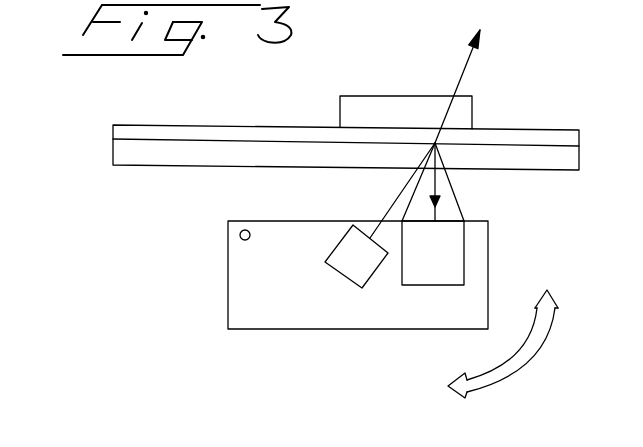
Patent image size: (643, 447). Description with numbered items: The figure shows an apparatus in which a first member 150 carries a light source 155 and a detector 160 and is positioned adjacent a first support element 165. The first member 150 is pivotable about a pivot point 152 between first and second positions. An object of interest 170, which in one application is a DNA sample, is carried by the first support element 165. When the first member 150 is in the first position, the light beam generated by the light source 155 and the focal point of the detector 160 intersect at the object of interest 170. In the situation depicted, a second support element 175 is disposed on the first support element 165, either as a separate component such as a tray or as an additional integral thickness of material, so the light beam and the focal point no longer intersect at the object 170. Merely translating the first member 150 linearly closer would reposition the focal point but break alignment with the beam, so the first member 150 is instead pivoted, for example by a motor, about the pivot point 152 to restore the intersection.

The first member 150 is at (228, 293).
The pivot point 152 is at (245, 230).
The light source 155 is at (330, 266).
The detector 160 is at (417, 285).
The first support element 165 is at (572, 172).
The object of interest 170 is at (400, 95).
The second support element 175 is at (557, 128).